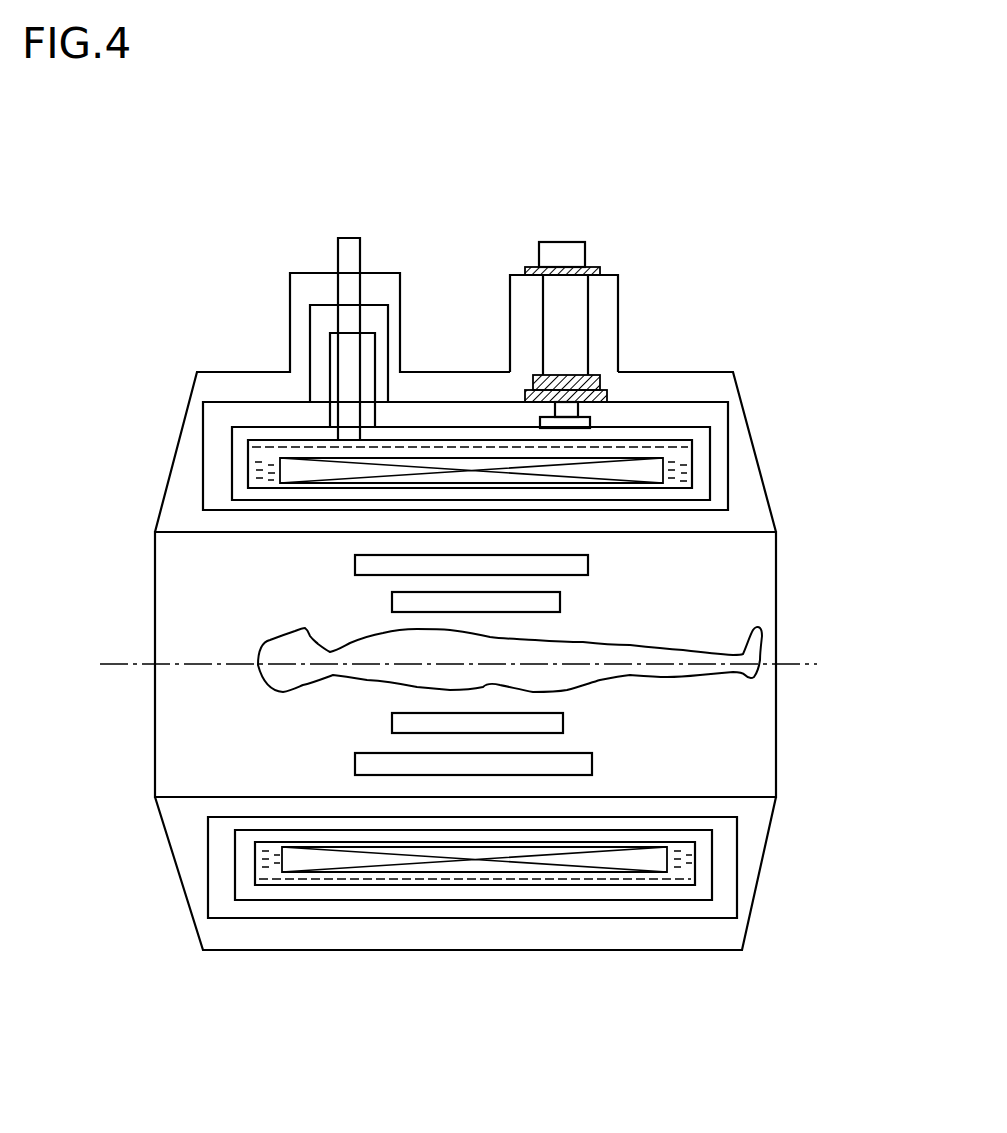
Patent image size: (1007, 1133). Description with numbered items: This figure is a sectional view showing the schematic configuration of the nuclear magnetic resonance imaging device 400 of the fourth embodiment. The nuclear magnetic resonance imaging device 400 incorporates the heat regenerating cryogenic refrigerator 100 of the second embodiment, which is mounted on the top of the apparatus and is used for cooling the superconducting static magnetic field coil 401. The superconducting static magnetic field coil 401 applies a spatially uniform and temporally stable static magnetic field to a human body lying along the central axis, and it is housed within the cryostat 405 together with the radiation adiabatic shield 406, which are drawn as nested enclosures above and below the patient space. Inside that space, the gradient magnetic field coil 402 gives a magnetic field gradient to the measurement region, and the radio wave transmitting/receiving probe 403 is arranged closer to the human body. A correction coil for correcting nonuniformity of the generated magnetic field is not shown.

The nuclear magnetic resonance imaging device 400 is at (790, 353).
The heat regenerating cryogenic refrigerator 100 is at (588, 327).
The superconducting static magnetic field coil 401 is at (680, 467).
The gradient magnetic field coil 402 is at (588, 565).
The radio wave transmitting/receiving probe 403 is at (563, 727).
The cryostat 405 is at (189, 402).
The radiation adiabatic shield 406 is at (232, 460).